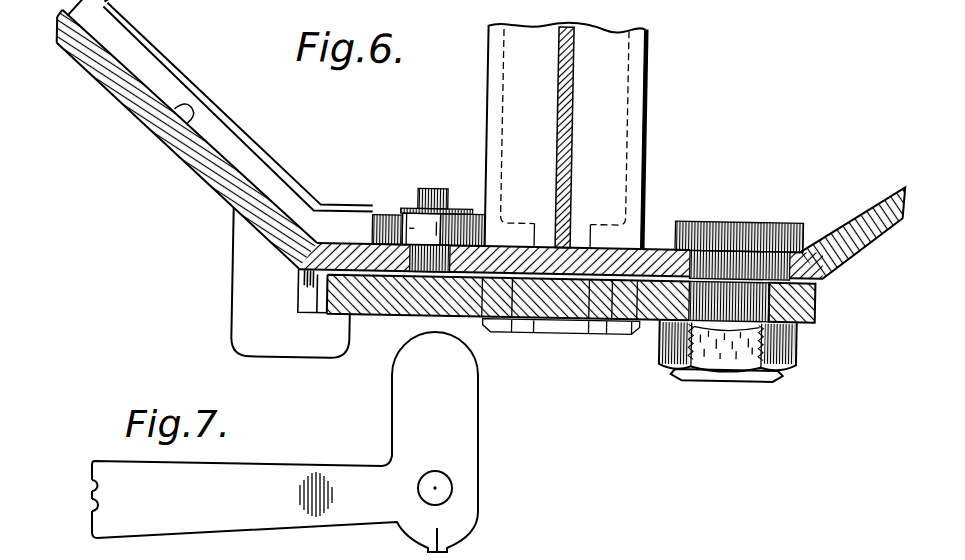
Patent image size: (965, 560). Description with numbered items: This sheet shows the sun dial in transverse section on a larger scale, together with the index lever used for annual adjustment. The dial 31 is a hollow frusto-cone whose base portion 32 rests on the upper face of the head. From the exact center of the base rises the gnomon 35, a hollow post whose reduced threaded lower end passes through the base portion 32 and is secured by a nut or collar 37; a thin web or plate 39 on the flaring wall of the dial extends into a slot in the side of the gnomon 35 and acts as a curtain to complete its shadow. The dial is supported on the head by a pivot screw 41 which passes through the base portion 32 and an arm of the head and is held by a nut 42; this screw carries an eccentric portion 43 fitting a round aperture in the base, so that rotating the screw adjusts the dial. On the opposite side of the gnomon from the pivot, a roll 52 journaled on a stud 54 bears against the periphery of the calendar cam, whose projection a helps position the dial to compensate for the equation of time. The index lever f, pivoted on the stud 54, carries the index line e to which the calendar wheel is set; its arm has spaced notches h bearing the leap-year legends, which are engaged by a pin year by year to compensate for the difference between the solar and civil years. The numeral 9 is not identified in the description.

In FIG. 6, the dial 31 is at (176, 135).
In FIG. 6, the lever 9 is at (239, 133).
In FIG. 6, the roll 52 is at (401, 218).
In FIG. 6, the stud 54 is at (432, 190).
In FIG. 6, the index line e is at (441, 210).
In FIG. 7, the index line e is at (449, 536).
In FIG. 6, the index lever f is at (471, 214).
In FIG. 7, the index lever f is at (457, 487).
In FIG. 6, the web or plate 39 is at (571, 139).
In FIG. 6, the gnomon 35 is at (645, 130).
In FIG. 6, the base portion 32 is at (649, 247).
In FIG. 6, the pivot screw 41 is at (716, 228).
In FIG. 6, the eccentric portion 43 is at (751, 257).
In FIG. 6, the nut 42 is at (787, 345).
In FIG. 6, the nut or collar 37 is at (626, 334).
In FIG. 7, the notches h is at (90, 514).
In FIG. 7, the projection of the cam a is at (273, 515).